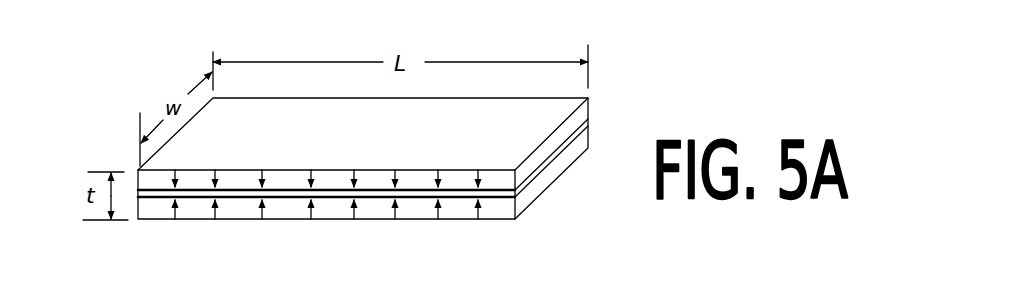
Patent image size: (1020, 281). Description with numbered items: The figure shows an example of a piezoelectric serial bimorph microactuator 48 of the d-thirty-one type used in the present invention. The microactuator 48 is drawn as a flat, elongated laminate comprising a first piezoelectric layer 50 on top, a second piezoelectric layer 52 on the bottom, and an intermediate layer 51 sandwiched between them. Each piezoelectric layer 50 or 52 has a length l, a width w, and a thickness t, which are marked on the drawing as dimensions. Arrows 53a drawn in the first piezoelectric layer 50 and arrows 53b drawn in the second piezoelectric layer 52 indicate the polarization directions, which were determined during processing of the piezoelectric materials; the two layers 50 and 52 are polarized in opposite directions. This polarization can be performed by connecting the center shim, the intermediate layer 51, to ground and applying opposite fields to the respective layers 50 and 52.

The piezoelectric serial bimorph microactuator 48 is at (411, 162).
The first piezoelectric layer 50 is at (497, 175).
The intermediate layer 51 is at (516, 192).
The second piezoelectric layer 52 is at (508, 205).
The arrows 53a is at (405, 173).
The arrows 53b is at (432, 208).